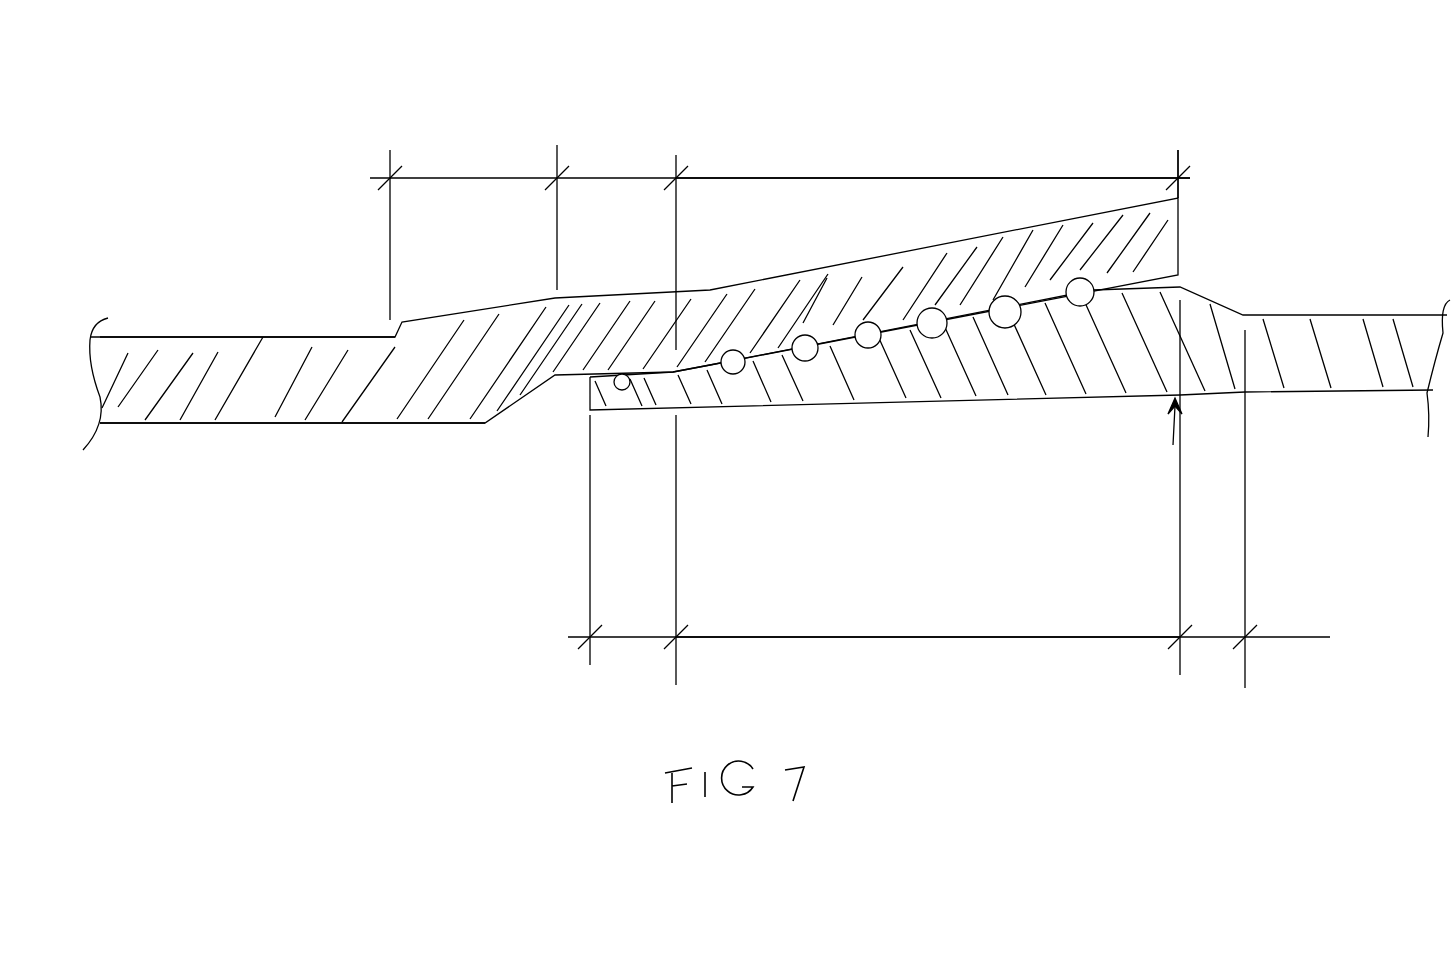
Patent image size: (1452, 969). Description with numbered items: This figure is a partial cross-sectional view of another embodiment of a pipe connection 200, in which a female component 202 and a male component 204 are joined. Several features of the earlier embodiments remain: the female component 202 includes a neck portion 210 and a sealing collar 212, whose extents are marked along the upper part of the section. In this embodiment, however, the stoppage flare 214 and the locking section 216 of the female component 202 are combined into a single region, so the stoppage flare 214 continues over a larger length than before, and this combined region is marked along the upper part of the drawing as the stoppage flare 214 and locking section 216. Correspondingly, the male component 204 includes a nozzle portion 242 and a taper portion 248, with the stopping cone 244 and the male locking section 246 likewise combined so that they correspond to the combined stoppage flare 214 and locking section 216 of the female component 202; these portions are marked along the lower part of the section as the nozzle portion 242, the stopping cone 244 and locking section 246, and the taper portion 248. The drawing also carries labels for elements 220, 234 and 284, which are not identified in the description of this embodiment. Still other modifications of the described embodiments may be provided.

The pipe connection 200 is at (766, 315).
The female component 202 is at (790, 252).
The male component 204 is at (987, 415).
The neck portion 210 is at (469, 232).
The sealing collar 212 is at (622, 249).
The stoppage flare 214 is at (933, 171).
The locking section 216 is at (933, 171).
The left base portion 220 is at (305, 322).
The small bead 234 is at (617, 399).
The beads / spacers 284 is at (850, 353).
The nozzle portion 242 is at (628, 550).
The stopping cone 244 is at (934, 487).
The locking section 246 is at (928, 623).
The taper portion 248 is at (1255, 509).